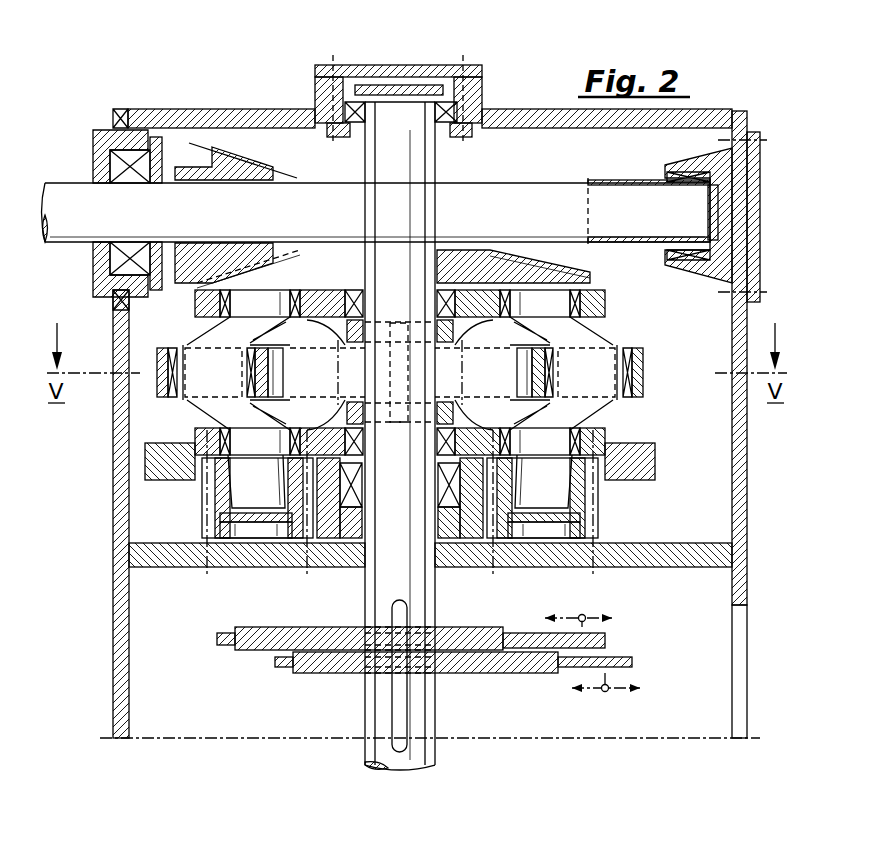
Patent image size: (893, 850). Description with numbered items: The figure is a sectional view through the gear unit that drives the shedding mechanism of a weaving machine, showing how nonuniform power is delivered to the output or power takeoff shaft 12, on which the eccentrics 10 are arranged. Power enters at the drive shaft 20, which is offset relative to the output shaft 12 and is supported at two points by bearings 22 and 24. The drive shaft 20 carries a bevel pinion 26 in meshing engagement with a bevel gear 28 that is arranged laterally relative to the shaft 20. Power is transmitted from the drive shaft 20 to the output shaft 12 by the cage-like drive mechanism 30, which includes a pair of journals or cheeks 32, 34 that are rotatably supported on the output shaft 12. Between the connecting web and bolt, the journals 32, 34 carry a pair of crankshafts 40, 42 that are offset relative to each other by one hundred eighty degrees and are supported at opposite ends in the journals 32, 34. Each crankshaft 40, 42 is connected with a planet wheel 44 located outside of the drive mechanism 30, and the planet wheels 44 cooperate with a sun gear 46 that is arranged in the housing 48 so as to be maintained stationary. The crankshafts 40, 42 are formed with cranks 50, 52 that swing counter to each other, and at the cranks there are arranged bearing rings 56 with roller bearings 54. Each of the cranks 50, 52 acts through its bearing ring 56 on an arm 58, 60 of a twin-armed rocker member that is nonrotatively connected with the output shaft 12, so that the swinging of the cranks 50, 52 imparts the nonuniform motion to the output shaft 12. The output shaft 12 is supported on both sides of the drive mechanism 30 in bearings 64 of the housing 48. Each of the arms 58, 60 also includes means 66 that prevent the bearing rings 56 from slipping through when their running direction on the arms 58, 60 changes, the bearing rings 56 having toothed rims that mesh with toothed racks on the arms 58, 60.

The eccentrics 10 is at (482, 672).
The output or power takeoff shaft 12 is at (377, 708).
The drive shaft 20 is at (73, 223).
The bearing 22 is at (115, 168).
The bearing 24 is at (677, 270).
The bevel pinion 26 is at (243, 148).
The bevel gear 28 is at (573, 262).
The drive mechanism 30 is at (152, 425).
The journal or cheek 32 is at (603, 303).
The journal or cheek 34 is at (613, 433).
The crankshaft 40 is at (541, 497).
The crankshaft 42 is at (257, 497).
The planet wheel 44 is at (201, 516).
The sun gear 46 is at (464, 557).
The housing 48 is at (117, 503).
The crank 50 is at (576, 389).
The crank 52 is at (199, 389).
The roller bearings 54 is at (638, 367).
The bearing rings 56 is at (637, 388).
The arm 58 is at (527, 377).
The arm 60 is at (283, 375).
The bearings 64 is at (457, 110).
The means preventing slipping 66 is at (170, 340).